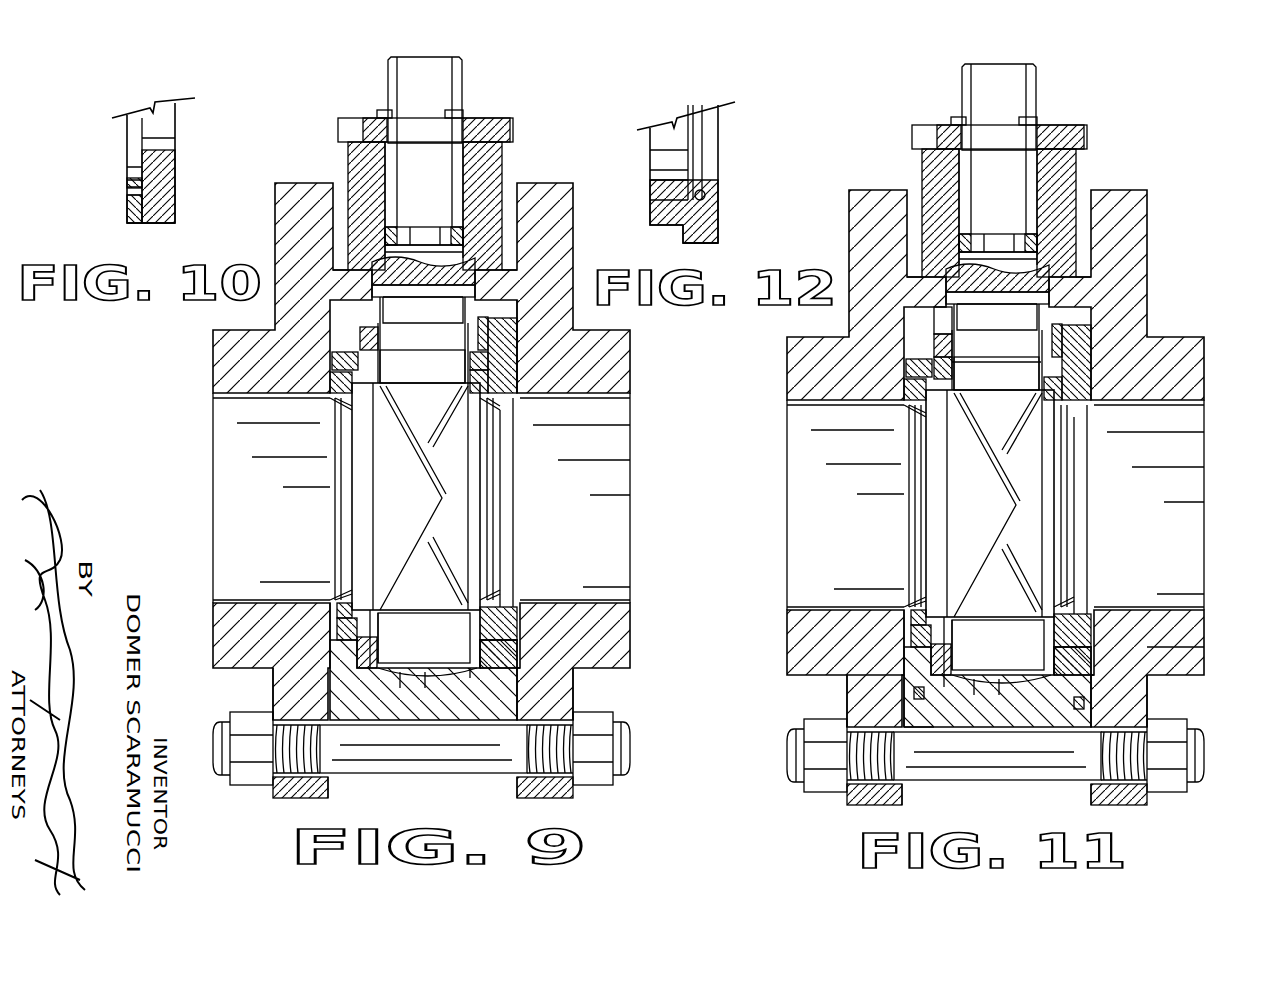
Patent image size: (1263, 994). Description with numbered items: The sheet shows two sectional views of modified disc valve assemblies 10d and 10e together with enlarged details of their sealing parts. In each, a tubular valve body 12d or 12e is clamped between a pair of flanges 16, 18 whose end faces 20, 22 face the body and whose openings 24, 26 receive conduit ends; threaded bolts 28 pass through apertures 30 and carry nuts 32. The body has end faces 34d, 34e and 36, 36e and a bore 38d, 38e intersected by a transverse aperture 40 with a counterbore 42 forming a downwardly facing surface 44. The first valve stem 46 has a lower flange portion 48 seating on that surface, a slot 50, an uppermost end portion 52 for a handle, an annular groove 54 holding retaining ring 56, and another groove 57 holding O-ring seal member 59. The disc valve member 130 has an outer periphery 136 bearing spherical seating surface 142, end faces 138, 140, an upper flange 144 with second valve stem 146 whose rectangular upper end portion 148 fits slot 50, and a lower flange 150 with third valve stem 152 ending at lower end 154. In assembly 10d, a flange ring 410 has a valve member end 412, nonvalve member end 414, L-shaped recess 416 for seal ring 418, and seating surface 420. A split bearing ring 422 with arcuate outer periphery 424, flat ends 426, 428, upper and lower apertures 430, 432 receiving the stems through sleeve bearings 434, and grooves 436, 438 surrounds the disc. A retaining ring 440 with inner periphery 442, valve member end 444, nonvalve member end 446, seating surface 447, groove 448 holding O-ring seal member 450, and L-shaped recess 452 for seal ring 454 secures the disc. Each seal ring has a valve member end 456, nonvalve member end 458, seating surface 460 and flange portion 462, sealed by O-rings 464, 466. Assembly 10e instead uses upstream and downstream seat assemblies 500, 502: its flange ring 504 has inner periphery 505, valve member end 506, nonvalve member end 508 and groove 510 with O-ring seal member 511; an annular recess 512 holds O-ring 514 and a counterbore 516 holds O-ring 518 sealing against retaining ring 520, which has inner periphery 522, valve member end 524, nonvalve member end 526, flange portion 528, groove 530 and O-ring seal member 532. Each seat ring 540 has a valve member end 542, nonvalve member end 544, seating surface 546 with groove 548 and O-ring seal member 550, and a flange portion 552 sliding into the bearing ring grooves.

In FIG. 9, the valve assembly 10d is at (533, 167).
In FIG. 11, the valve assembly 10e is at (1020, 176).
In FIG. 9, the valve body 12d is at (380, 735).
In FIG. 11, the valve body 12e is at (995, 473).
In FIG. 9, the flange 16 is at (300, 796).
In FIG. 11, the flange 16 is at (858, 805).
In FIG. 9, the flange 18 is at (555, 797).
In FIG. 11, the flange 18 is at (1119, 808).
In FIG. 9, the end face 20 is at (330, 794).
In FIG. 11, the end face 20 is at (916, 805).
In FIG. 9, the end face 22 is at (517, 794).
In FIG. 11, the end face 22 is at (1070, 807).
In FIG. 9, the opening 24 is at (225, 590).
In FIG. 11, the opening 24 is at (822, 510).
In FIG. 9, the opening 26 is at (622, 590).
In FIG. 11, the opening 26 is at (1166, 505).
In FIG. 9, the threaded bolt 28 is at (400, 762).
In FIG. 11, the threaded bolt 28 is at (997, 769).
In FIG. 9, the aperture 30 is at (322, 745).
In FIG. 11, the aperture 30 is at (992, 756).
In FIG. 9, the threaded nut 32 is at (245, 784).
In FIG. 11, the threaded nut 32 is at (985, 773).
In FIG. 9, the end face 34d is at (290, 695).
In FIG. 11, the end face 34e is at (881, 701).
In FIG. 9, the end face 36 is at (520, 685).
In FIG. 11, the end face 36e is at (1118, 701).
In FIG. 9, the bore 38d is at (470, 682).
In FIG. 11, the bore 38e is at (970, 691).
In FIG. 9, the aperture 40 is at (388, 165).
In FIG. 11, the aperture 40 is at (959, 213).
In FIG. 9, the counterbore 42 is at (382, 244).
In FIG. 11, the counterbore 42 is at (982, 250).
In FIG. 9, the downwardly facing surface 44 is at (485, 260).
In FIG. 11, the downwardly facing surface 44 is at (1011, 207).
In FIG. 9, the first valve stem 46 is at (435, 172).
In FIG. 11, the first valve stem 46 is at (1075, 213).
In FIG. 9, the lower flange portion 48 is at (377, 273).
In FIG. 11, the lower flange portion 48 is at (961, 273).
In FIG. 9, the slot 50 is at (373, 302).
In FIG. 11, the slot 50 is at (961, 300).
In FIG. 9, the uppermost end portion 52 is at (445, 78).
In FIG. 11, the uppermost end portion 52 is at (1022, 142).
In FIG. 9, the annular groove 54 is at (397, 114).
In FIG. 11, the annular groove 54 is at (994, 105).
In FIG. 9, the retaining ring 56 is at (380, 112).
In FIG. 11, the retaining ring 56 is at (997, 117).
In FIG. 9, the annular groove 57 is at (410, 228).
In FIG. 11, the annular groove 57 is at (998, 228).
In FIG. 9, the O-ring seal member 59 is at (393, 222).
In FIG. 11, the O-ring seal member 59 is at (983, 226).
In FIG. 9, the disc valve member 130 is at (350, 500).
In FIG. 11, the disc valve member 130 is at (972, 506).
In FIG. 9, the outer periphery 136 is at (380, 398).
In FIG. 11, the outer periphery 136 is at (994, 360).
In FIG. 9, the end face 138 is at (350, 465).
In FIG. 11, the end face 138 is at (962, 506).
In FIG. 9, the end face 140 is at (375, 465).
In FIG. 11, the end face 140 is at (990, 503).
In FIG. 9, the seating surface 142 is at (335, 380).
In FIG. 11, the seating surface 142 is at (884, 404).
In FIG. 9, the upper flange 144 is at (435, 440).
In FIG. 11, the upper flange 144 is at (999, 505).
In FIG. 9, the second valve stem 146 is at (447, 307).
In FIG. 11, the second valve stem 146 is at (1050, 309).
In FIG. 9, the upper end portion 148 is at (438, 300).
In FIG. 11, the upper end portion 148 is at (1050, 287).
In FIG. 9, the lower flange 150 is at (432, 556).
In FIG. 11, the lower flange 150 is at (1022, 566).
In FIG. 9, the third valve stem 152 is at (440, 676).
In FIG. 11, the third valve stem 152 is at (1001, 692).
In FIG. 9, the lower end 154 is at (420, 684).
In FIG. 11, the lower end 154 is at (979, 675).
In FIG. 9, the flange ring 410 is at (350, 642).
In FIG. 9, the valve member end 412 is at (380, 630).
In FIG. 9, the nonvalve member end 414 is at (345, 622).
In FIG. 9, the L-shaped recess 416 is at (358, 604).
In FIG. 9, the seal ring 418 is at (350, 590).
In FIG. 10, the seal ring 418 is at (130, 212).
In FIG. 9, the seating surface 420 is at (345, 416).
In FIG. 9, the bearing ring 422 is at (520, 356).
In FIG. 11, the bearing ring 422 is at (995, 361).
In FIG. 9, the outer periphery 424 is at (352, 676).
In FIG. 11, the outer periphery 424 is at (904, 322).
In FIG. 9, the end 426 is at (368, 663).
In FIG. 11, the end 426 is at (904, 356).
In FIG. 9, the end 428 is at (510, 635).
In FIG. 11, the end 428 is at (1100, 334).
In FIG. 9, the upper aperture 430 is at (385, 360).
In FIG. 11, the upper aperture 430 is at (996, 373).
In FIG. 9, the lower aperture 432 is at (460, 648).
In FIG. 11, the lower aperture 432 is at (997, 645).
In FIG. 9, the sleeve bearing 434 is at (390, 335).
In FIG. 11, the sleeve bearing 434 is at (996, 485).
In FIG. 9, the annular groove 436 is at (357, 340).
In FIG. 11, the annular groove 436 is at (886, 352).
In FIG. 9, the second annular groove 438 is at (510, 668).
In FIG. 11, the second annular groove 438 is at (1122, 662).
In FIG. 9, the retaining ring 440 is at (512, 590).
In FIG. 9, the inner periphery 442 is at (510, 568).
In FIG. 9, the valve member end 444 is at (488, 322).
In FIG. 9, the nonvalve member end 446 is at (515, 650).
In FIG. 9, the seating surface 447 is at (494, 437).
In FIG. 9, the annular groove 448 is at (560, 342).
In FIG. 9, the O-ring seal member 450 is at (513, 335).
In FIG. 9, the L-shaped recess 452 is at (500, 410).
In FIG. 9, the seal ring 454 is at (495, 556).
In FIG. 10, the seal ring 454 is at (108, 205).
In FIG. 10, the valve member end 456 is at (172, 195).
In FIG. 10, the nonvalve member end 458 is at (130, 182).
In FIG. 10, the seating surface 460 is at (165, 162).
In FIG. 10, the flange portion 462 is at (140, 225).
In FIG. 9, the O-ring 464 is at (332, 362).
In FIG. 9, the O-ring 466 is at (530, 372).
In FIG. 11, the upstream seat assembly 500 is at (891, 506).
In FIG. 11, the downstream seat assembly 502 is at (1114, 511).
In FIG. 11, the flange ring 504 is at (1102, 646).
In FIG. 11, the inner periphery 505 is at (1110, 584).
In FIG. 11, the valve member end 506 is at (1097, 662).
In FIG. 11, the nonvalve member end 508 is at (1198, 639).
In FIG. 11, the annular groove 510 is at (1105, 362).
In FIG. 11, the O-ring seal member 511 is at (1105, 616).
In FIG. 11, the annular recess 512 is at (997, 703).
In FIG. 11, the O-ring seal member 514 is at (1105, 710).
In FIG. 11, the counterbore 516 is at (914, 743).
In FIG. 11, the O-ring seal member 518 is at (945, 706).
In FIG. 11, the retaining ring 520 is at (855, 660).
In FIG. 11, the inner periphery 522 is at (886, 615).
In FIG. 11, the valve member end 524 is at (974, 634).
In FIG. 11, the nonvalve member end 526 is at (899, 665).
In FIG. 11, the flange portion 528 is at (881, 701).
In FIG. 11, the annular groove 530 is at (890, 639).
In FIG. 11, the O-ring seal member 532 is at (887, 623).
In FIG. 12, the seat ring 540 is at (650, 195).
In FIG. 11, the seat ring 540 is at (1004, 379).
In FIG. 12, the valve member end 542 is at (720, 228).
In FIG. 12, the nonvalve member end 544 is at (650, 212).
In FIG. 12, the seating surface 546 is at (702, 165).
In FIG. 11, the seating surface 546 is at (995, 506).
In FIG. 12, the annular groove 548 is at (660, 182).
In FIG. 12, the O-ring seal member 550 is at (708, 195).
In FIG. 12, the flange portion 552 is at (700, 244).